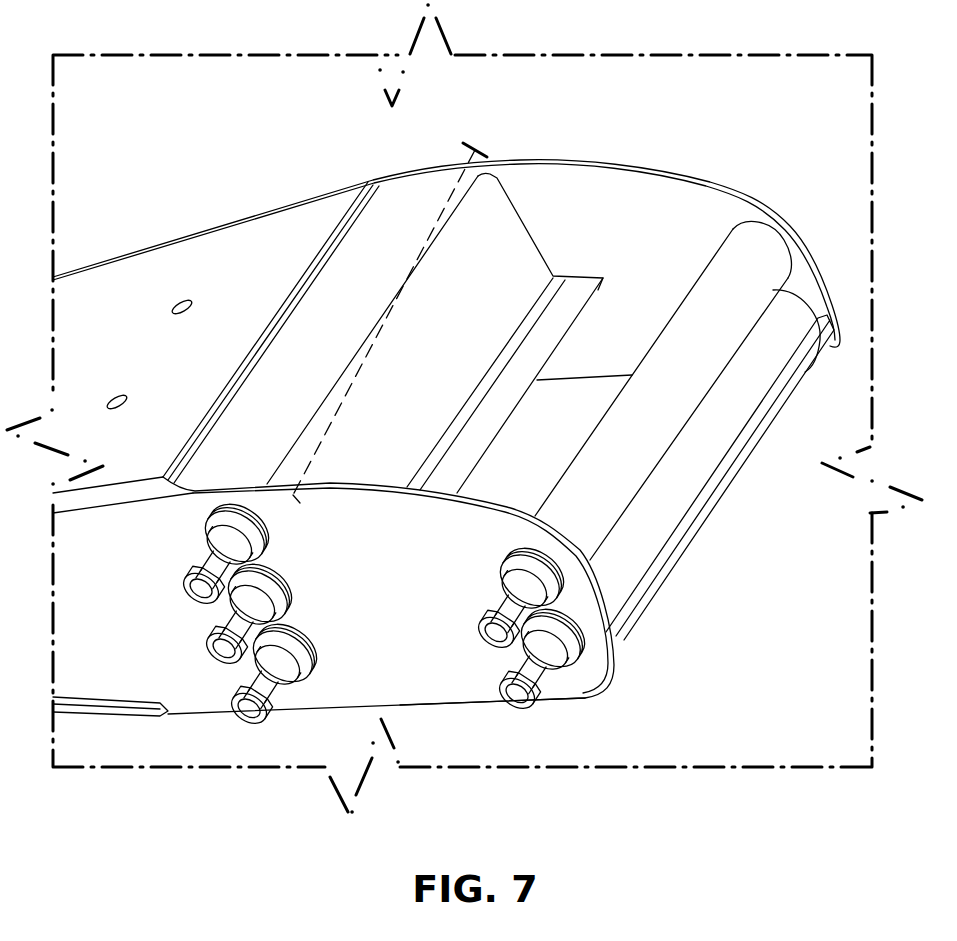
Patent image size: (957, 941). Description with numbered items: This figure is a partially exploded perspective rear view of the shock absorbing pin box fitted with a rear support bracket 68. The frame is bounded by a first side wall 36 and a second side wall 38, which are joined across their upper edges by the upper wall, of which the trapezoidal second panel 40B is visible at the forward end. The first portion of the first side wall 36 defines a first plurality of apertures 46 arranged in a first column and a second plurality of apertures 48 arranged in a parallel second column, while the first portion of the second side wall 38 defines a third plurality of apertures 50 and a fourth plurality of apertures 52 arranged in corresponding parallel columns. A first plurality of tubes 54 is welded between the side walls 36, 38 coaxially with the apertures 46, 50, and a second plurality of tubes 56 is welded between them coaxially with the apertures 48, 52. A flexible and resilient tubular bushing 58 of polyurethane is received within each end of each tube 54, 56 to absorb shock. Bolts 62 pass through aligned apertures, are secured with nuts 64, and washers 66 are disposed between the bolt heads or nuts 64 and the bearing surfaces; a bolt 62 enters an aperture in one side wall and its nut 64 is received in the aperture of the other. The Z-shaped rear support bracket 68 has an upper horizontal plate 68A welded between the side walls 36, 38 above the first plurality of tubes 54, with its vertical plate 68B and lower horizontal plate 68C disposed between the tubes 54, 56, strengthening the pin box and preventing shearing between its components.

The first side wall 36 is at (361, 607).
The second side wall 38 is at (621, 251).
The second panel of the upper wall 40B is at (76, 348).
The first plurality of apertures 46 is at (478, 141).
The second plurality of apertures 48 is at (790, 201).
The third plurality of apertures 50 is at (258, 735).
The fourth plurality of apertures 52 is at (527, 730).
The first plurality of tubes 54 is at (390, 312).
The second plurality of tubes 56 is at (670, 371).
The flexible and resilient tubular bushing 58 is at (395, 624).
The bolt 62 is at (220, 550).
The nut 64 is at (198, 590).
The washer 66 is at (213, 532).
The rear support bracket 68 is at (383, 308).
The upper horizontal plate 68A is at (317, 323).
The vertical plate 68B is at (407, 378).
The lower horizontal plate 68C is at (497, 403).